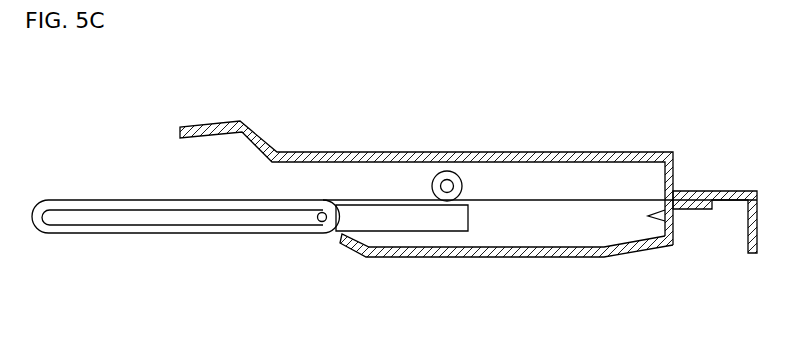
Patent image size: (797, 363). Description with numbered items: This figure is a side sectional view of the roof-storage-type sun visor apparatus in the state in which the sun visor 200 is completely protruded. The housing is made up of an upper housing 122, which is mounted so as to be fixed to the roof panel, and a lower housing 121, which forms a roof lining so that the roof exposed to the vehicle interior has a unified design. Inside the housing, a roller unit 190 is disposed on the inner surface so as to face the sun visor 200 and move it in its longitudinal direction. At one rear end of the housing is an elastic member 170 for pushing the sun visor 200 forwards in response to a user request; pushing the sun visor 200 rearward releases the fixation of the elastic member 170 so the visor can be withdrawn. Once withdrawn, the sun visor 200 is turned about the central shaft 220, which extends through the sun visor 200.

The lower housing 121 is at (630, 244).
The upper housing 122 is at (543, 152).
The elastic member 170 is at (654, 213).
The roller unit 190 is at (447, 171).
The sun visor 200 is at (421, 240).
The central shaft 220 is at (322, 221).